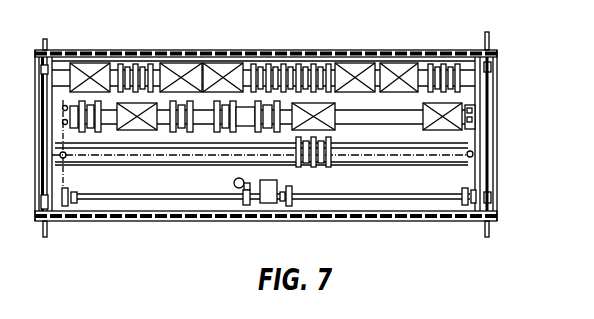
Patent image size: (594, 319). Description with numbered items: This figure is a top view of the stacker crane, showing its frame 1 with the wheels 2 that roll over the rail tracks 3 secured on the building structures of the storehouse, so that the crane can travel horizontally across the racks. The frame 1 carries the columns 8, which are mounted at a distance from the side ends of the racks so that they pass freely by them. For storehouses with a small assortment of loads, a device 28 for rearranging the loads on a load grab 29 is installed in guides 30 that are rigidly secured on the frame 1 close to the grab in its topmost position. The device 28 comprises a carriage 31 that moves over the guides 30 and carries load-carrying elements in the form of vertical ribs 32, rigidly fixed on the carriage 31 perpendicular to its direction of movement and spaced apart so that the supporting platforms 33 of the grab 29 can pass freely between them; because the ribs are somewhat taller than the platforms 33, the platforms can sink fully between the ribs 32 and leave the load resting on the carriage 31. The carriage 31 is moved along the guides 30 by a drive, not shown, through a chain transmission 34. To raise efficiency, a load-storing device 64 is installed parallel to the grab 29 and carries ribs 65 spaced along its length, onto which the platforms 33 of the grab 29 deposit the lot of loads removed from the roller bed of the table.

The frame 1 is at (397, 51).
The wheels 2 is at (498, 62).
The rail tracks 3 is at (488, 43).
The columns 8 is at (475, 98).
The device for rearranging the loads 28 is at (325, 171).
The load grab 29 is at (247, 108).
The guides 30 is at (438, 166).
The carriage 31 is at (303, 161).
The vertical ribs 32 is at (270, 150).
The supporting platforms 33 is at (261, 105).
The chain transmission 34 is at (458, 163).
The load-storing device 64 is at (148, 50).
The ribs of the storing device 65 is at (130, 70).